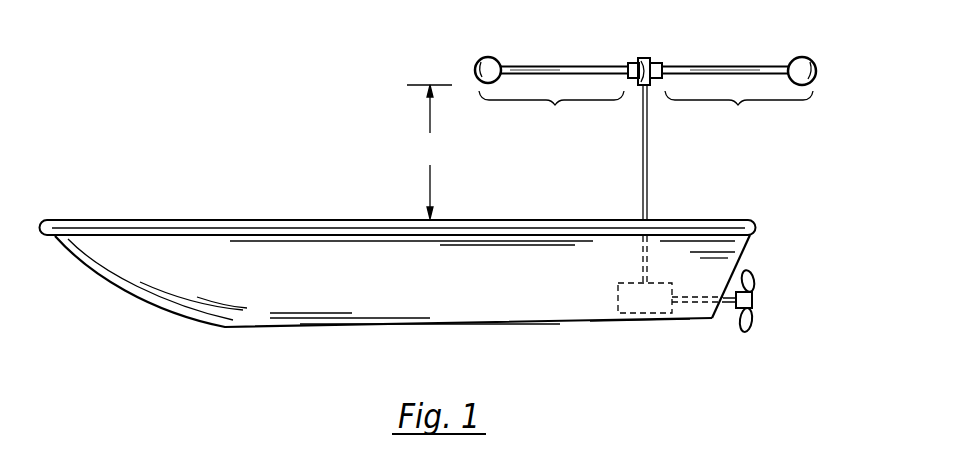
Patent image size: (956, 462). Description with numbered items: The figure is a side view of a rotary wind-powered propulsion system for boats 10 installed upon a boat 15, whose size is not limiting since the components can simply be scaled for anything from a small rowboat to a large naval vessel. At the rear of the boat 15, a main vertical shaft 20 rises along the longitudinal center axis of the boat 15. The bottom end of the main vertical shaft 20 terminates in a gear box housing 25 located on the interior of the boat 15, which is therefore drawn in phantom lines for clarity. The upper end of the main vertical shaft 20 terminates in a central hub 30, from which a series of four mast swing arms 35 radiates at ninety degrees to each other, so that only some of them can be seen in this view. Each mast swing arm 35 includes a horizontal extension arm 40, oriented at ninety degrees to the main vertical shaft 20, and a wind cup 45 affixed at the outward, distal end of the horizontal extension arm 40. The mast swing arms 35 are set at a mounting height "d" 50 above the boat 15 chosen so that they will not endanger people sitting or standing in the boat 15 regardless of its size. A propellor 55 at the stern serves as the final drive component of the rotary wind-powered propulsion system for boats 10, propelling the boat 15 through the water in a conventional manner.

The rotary wind-powered propulsion system for boats 10 is at (258, 126).
The boat 15 is at (233, 310).
The main vertical shaft 20 is at (649, 176).
The gear box housing 25 is at (634, 313).
The central hub 30 is at (655, 62).
The mast swing arms 35 is at (646, 111).
The horizontal extension arm 40 is at (566, 66).
The wind cup 45 is at (481, 59).
The mounting height "d" 50 is at (420, 158).
The propellor 55 is at (748, 328).